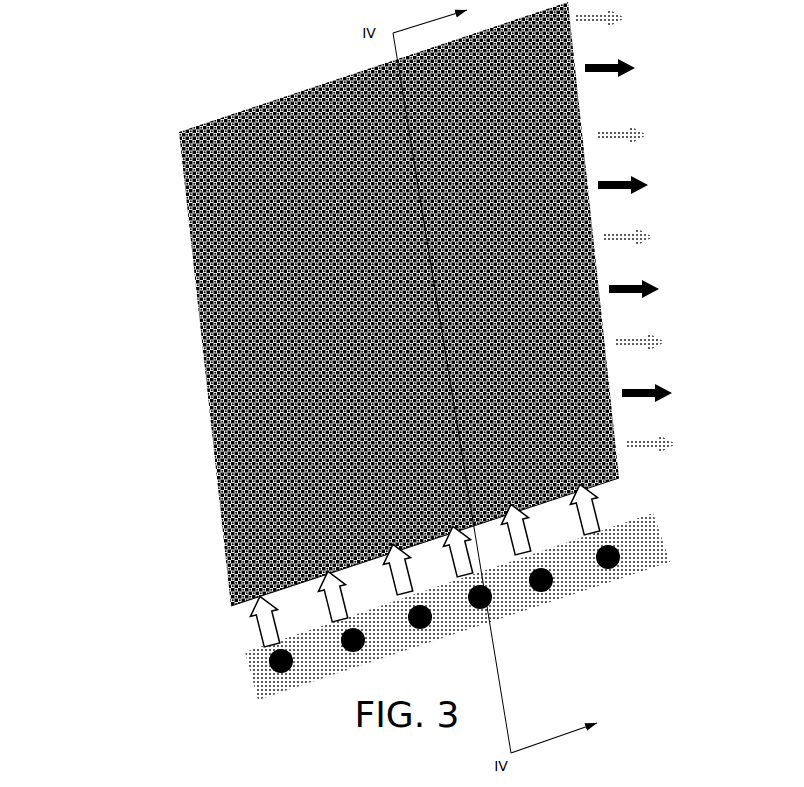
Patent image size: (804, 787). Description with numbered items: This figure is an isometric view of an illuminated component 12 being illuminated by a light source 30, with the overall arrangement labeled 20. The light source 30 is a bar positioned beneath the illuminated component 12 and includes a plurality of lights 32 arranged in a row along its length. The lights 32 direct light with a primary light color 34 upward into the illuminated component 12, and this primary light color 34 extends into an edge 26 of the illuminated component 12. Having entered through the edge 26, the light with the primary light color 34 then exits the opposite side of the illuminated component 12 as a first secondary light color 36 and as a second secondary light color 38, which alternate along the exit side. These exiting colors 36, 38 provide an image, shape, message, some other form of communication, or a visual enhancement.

The sheet forming system 20 is at (38, 0).
The illuminated component 12 is at (126, 228).
The edge 26 is at (597, 481).
The light source 30 is at (213, 666).
The lights 32 is at (275, 665).
The primary light color 34 is at (257, 628).
The first secondary light color 36 is at (603, 22).
The second secondary light color 38 is at (636, 70).